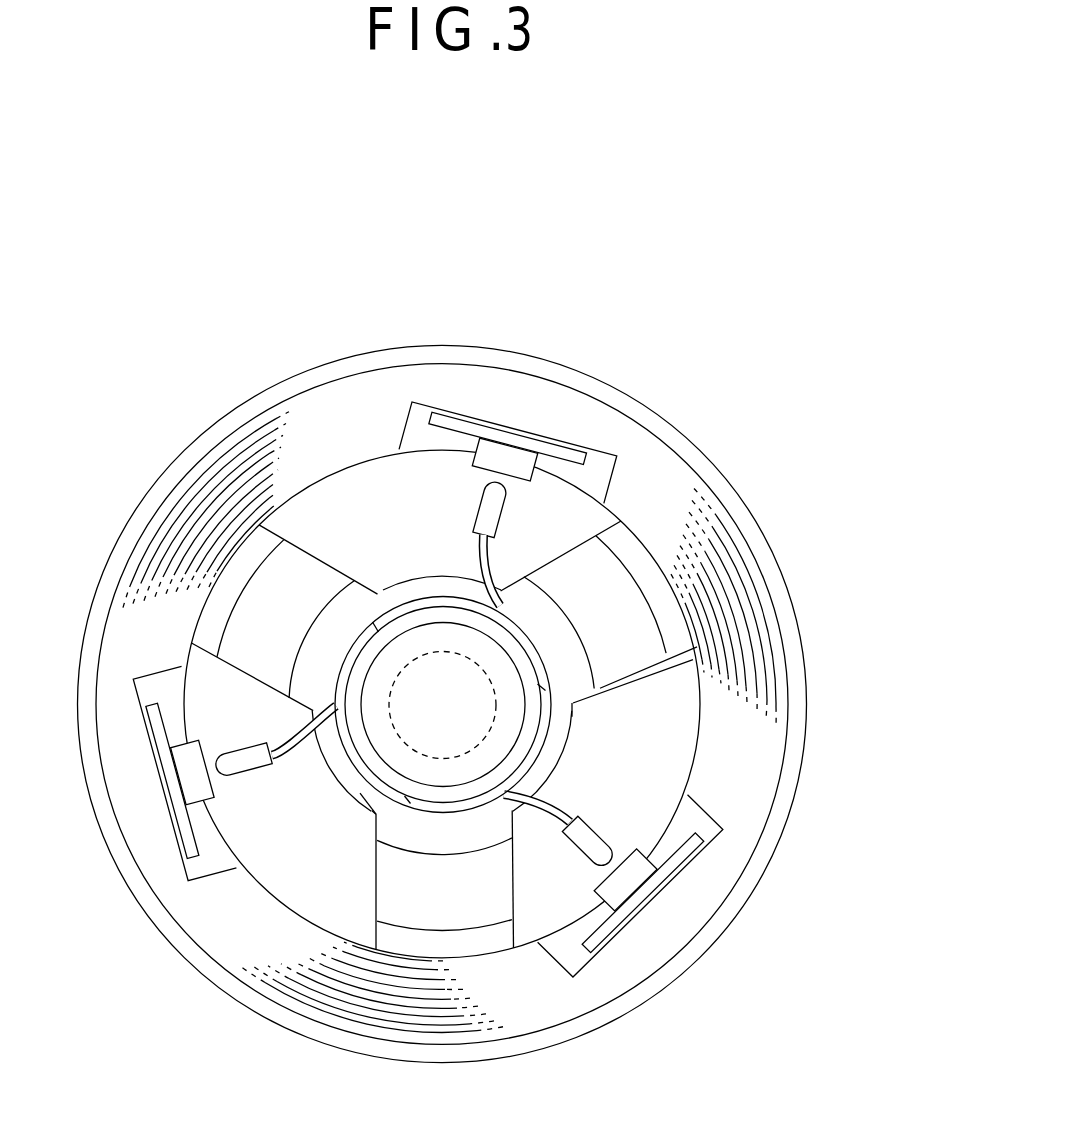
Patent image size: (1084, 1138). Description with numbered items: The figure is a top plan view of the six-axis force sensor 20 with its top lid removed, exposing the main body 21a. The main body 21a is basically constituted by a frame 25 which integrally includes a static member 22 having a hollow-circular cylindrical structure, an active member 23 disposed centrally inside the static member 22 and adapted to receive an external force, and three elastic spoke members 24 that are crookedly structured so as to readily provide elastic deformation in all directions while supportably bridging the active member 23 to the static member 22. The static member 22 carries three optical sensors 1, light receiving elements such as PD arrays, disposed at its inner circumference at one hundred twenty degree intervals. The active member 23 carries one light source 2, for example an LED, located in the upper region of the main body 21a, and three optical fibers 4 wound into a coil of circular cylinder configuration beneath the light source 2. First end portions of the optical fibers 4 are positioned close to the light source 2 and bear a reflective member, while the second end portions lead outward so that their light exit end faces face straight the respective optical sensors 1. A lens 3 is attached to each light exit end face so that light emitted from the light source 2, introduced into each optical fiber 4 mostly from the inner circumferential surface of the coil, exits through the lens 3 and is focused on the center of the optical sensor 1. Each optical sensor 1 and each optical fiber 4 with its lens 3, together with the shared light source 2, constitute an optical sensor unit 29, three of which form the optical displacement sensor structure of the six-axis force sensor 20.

The optical sensor 1 is at (517, 458).
The light source 2 is at (420, 722).
The lens 3 is at (498, 485).
The optical fiber 4 is at (458, 550).
The six-axis force sensor 20 is at (880, 262).
The main body 21a is at (716, 383).
The static member 22 is at (655, 477).
The active member 23 is at (568, 710).
The elastic spoke member 24 is at (607, 610).
The frame 25 is at (521, 722).
The optical sensor unit 29 is at (592, 737).